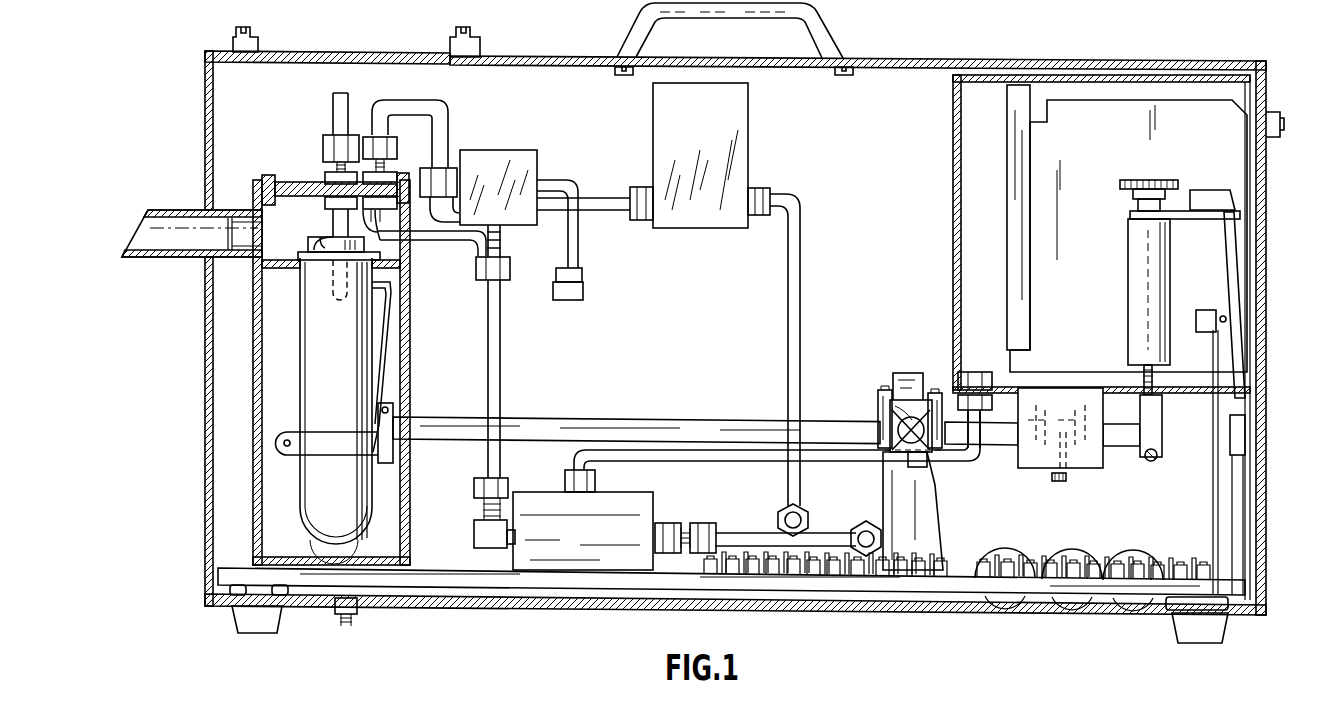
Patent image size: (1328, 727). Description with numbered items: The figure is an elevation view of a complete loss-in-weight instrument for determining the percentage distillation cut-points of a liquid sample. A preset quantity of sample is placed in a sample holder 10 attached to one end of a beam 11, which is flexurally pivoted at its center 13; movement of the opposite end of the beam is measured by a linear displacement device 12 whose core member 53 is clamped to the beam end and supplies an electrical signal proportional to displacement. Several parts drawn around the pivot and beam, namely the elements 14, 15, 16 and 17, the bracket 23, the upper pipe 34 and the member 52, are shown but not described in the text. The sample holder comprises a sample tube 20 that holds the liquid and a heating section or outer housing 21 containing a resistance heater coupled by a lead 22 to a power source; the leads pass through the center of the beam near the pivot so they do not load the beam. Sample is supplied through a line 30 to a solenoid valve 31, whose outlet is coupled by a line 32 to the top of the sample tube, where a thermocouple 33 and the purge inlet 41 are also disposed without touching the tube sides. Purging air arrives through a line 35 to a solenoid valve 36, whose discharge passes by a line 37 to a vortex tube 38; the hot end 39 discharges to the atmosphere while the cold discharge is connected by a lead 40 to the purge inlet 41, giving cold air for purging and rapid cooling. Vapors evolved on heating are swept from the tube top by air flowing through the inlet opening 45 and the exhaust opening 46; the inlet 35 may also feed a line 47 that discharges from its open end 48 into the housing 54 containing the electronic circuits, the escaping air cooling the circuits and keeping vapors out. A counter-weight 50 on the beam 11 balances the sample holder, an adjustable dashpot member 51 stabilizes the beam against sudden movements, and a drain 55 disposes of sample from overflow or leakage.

The sample holder 10 is at (352, 397).
The beam 11 is at (708, 418).
The linear displacement device 12 is at (1244, 250).
The center flexure pivot 13 is at (898, 430).
The valve nut 14 is at (892, 400).
The valve upper block 15 is at (920, 378).
The valve body 16 is at (900, 400).
The valve stand 17 is at (884, 487).
The sample tube 20 is at (364, 246).
The heating section or outer housing 21 is at (300, 384).
The lead 22 is at (392, 360).
The pivot bracket 23 is at (366, 462).
The line 30 is at (802, 256).
The solenoid valve 31 is at (750, 132).
The line 32 is at (312, 235).
The thermocouple 33 is at (330, 290).
The inlet pipe 34 is at (333, 100).
The line 35 is at (760, 533).
The solenoid valve 36 is at (626, 490).
The line 37 is at (500, 312).
The vortex tube 38 is at (520, 152).
The hot end 39 is at (582, 250).
The lead 40 is at (405, 104).
The purge inlet 41 is at (355, 300).
The inlet opening 45 is at (412, 242).
The exhaust opening 46 is at (180, 210).
The line 47 is at (702, 462).
The open end 48 is at (972, 372).
The counter-weight 50 is at (1073, 416).
The adjustable dashpot member 51 is at (1128, 296).
The knob 52 is at (1196, 190).
The core member 53 is at (1246, 400).
The housing 54 is at (1100, 219).
The drain 55 is at (353, 622).